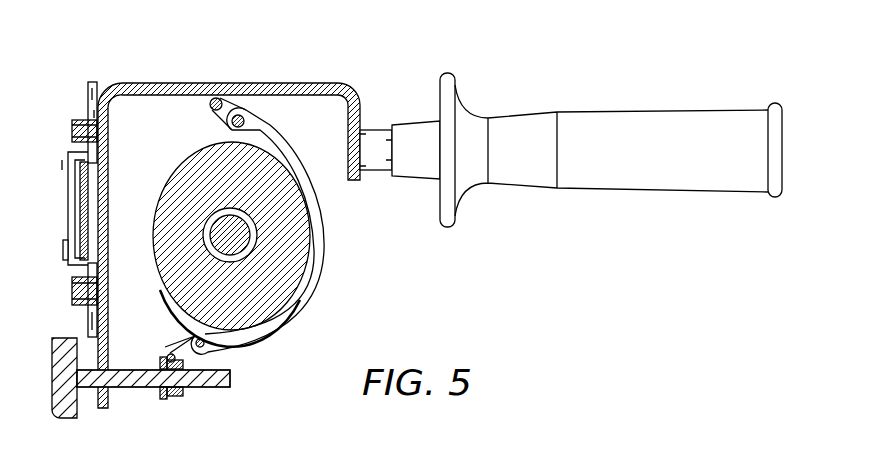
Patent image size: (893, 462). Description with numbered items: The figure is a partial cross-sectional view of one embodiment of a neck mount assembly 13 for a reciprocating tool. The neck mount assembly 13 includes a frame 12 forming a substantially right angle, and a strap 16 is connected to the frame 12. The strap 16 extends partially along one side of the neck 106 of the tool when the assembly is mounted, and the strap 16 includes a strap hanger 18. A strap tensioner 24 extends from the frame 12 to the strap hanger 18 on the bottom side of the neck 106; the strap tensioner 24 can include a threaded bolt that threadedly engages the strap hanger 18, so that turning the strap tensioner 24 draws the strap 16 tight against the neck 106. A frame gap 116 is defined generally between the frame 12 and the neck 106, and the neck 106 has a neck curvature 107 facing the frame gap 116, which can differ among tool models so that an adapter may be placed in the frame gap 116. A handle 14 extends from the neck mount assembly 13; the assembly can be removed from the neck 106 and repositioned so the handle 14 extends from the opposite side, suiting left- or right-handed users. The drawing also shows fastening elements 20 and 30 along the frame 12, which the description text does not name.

The frame 12 is at (300, 83).
The neck mount assembly 13 is at (270, 33).
The handle 14 is at (615, 110).
The strap 16 is at (313, 265).
The strap hanger 18 is at (173, 392).
The pin 20 is at (88, 98).
The strap tensioner 24 is at (63, 418).
The clip 30 is at (83, 187).
The neck 106 is at (190, 318).
The neck curvature 107 is at (198, 143).
The frame gap 116 is at (137, 127).